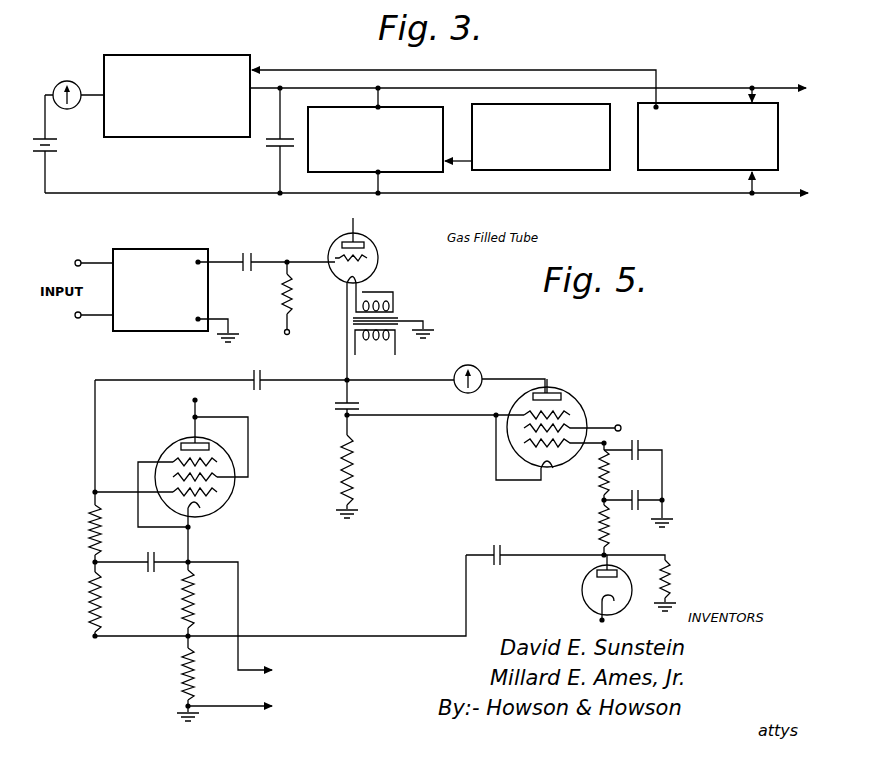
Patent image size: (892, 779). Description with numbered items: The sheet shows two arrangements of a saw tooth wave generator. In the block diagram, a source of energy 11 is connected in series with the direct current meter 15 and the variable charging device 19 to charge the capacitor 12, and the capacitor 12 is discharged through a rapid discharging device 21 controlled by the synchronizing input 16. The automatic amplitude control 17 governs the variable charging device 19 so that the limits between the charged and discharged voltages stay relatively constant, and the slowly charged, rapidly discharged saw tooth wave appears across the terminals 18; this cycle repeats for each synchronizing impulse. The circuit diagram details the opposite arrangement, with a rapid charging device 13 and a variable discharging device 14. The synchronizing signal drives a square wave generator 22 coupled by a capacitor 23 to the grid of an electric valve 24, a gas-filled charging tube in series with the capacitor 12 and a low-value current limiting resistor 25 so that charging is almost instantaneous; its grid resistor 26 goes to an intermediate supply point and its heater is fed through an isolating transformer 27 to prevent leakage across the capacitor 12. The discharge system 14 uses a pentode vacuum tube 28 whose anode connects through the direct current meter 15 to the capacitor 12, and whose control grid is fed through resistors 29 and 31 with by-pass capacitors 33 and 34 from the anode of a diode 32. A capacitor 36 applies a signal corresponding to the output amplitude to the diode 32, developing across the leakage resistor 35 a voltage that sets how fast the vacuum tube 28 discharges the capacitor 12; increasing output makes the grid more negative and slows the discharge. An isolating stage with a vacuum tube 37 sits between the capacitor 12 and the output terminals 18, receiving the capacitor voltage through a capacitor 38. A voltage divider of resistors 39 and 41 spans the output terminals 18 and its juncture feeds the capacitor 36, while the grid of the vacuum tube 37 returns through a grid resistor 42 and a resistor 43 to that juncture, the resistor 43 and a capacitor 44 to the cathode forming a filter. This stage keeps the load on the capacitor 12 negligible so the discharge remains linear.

In FIG. 3, the source of energy 11 is at (58, 146).
In FIG. 3, the capacitor 12 is at (267, 144).
In FIG. 5, the capacitor 12 is at (332, 410).
In FIG. 5, the rapid charging device 13 is at (359, 295).
In FIG. 5, the variable discharging device 14 is at (492, 414).
In FIG. 3, the direct current meter 15 is at (66, 81).
In FIG. 5, the direct current meter 15 is at (474, 365).
In FIG. 3, the synchronizing input 16 is at (583, 166).
In FIG. 3, the automatic amplitude control 17 is at (770, 142).
In FIG. 5, the automatic amplitude control 17 is at (578, 580).
In FIG. 3, the output terminals 18 is at (808, 85).
In FIG. 5, the output terminals 18 is at (278, 670).
In FIG. 3, the variable charging device 19 is at (162, 128).
In FIG. 3, the rapid discharging device 21 is at (432, 166).
In FIG. 5, the square wave generator 22 is at (148, 334).
In FIG. 5, the capacitor 23 is at (266, 247).
In FIG. 5, the electric valve 24 is at (367, 247).
In FIG. 5, the current limiting resistor 25 is at (358, 471).
In FIG. 5, the grid resistor 26 is at (280, 292).
In FIG. 5, the isolating transformer 27 is at (400, 326).
In FIG. 5, the vacuum tube 28 is at (560, 388).
In FIG. 5, the resistor 29 is at (594, 482).
In FIG. 5, the resistor 31 is at (596, 528).
In FIG. 5, the diode 32 is at (578, 598).
In FIG. 5, the by-pass capacitor 33 is at (642, 446).
In FIG. 5, the by-pass capacitor 34 is at (646, 494).
In FIG. 5, the leakage resistor 35 is at (672, 578).
In FIG. 5, the capacitor 36 is at (497, 546).
In FIG. 5, the vacuum tube 37 is at (228, 502).
In FIG. 5, the capacitor 38 is at (250, 375).
In FIG. 5, the resistor 39 is at (184, 606).
In FIG. 5, the resistor 41 is at (184, 684).
In FIG. 5, the resistor 42 is at (92, 522).
In FIG. 5, the resistor 43 is at (92, 628).
In FIG. 5, the capacitor 44 is at (152, 574).